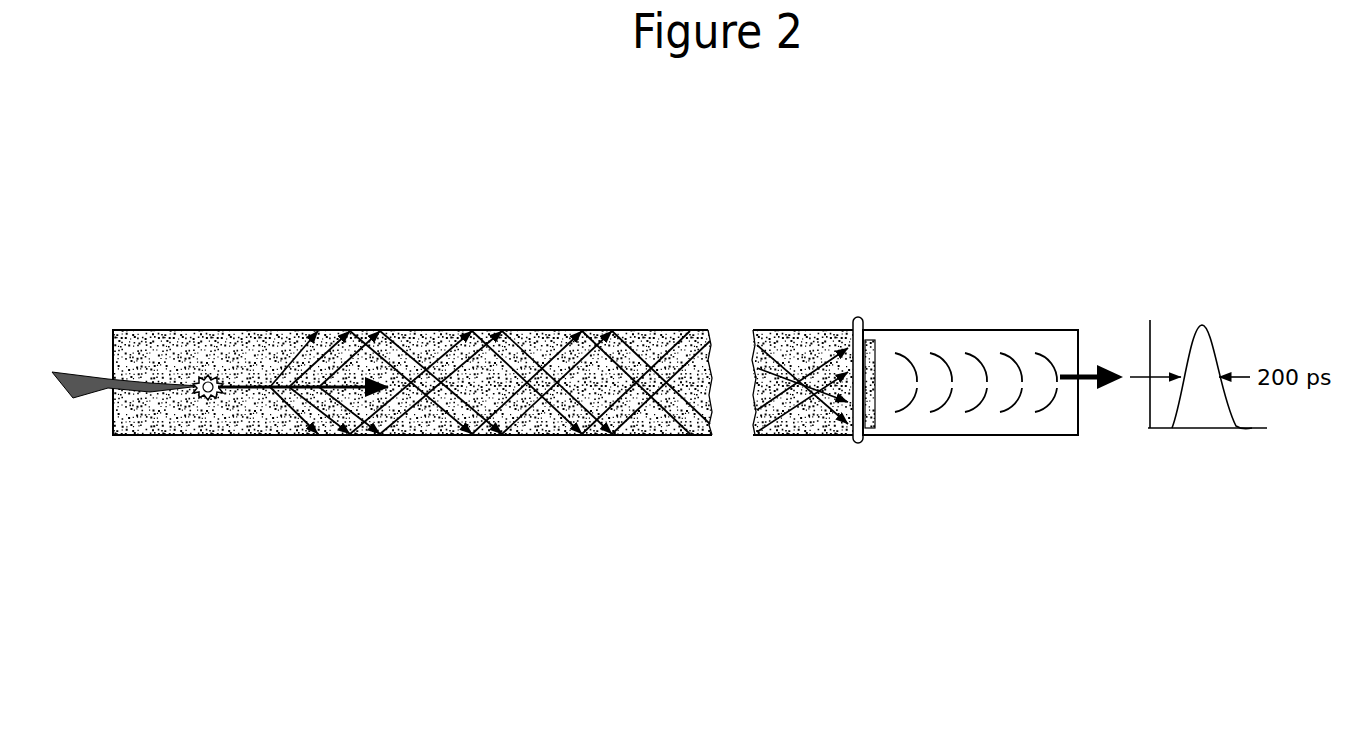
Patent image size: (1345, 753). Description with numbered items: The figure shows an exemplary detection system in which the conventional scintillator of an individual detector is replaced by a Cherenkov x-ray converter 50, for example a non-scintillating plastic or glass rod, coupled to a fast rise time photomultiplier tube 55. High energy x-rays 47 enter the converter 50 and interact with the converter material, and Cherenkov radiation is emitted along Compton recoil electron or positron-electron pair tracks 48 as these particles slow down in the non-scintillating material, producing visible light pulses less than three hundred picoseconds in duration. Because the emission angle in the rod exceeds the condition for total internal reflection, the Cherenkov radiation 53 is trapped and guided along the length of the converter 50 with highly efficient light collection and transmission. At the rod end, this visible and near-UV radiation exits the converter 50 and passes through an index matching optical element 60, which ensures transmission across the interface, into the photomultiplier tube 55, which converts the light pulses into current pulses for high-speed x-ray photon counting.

The high energy x-rays 47 is at (75, 372).
The Compton recoil electron or positron-electron pair tracks 48 is at (245, 393).
The Cherenkov x-ray converter 50 is at (647, 436).
The Cherenkov radiation 53 is at (827, 327).
The photomultiplier tube 55 is at (967, 437).
The index matching optical element 60 is at (860, 318).